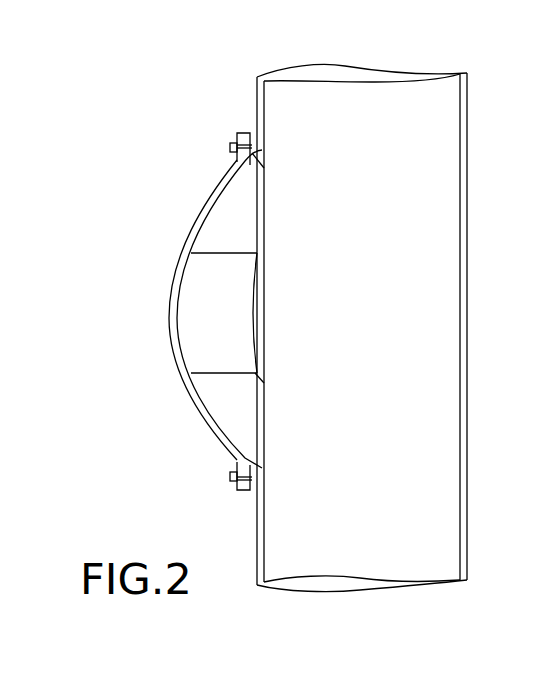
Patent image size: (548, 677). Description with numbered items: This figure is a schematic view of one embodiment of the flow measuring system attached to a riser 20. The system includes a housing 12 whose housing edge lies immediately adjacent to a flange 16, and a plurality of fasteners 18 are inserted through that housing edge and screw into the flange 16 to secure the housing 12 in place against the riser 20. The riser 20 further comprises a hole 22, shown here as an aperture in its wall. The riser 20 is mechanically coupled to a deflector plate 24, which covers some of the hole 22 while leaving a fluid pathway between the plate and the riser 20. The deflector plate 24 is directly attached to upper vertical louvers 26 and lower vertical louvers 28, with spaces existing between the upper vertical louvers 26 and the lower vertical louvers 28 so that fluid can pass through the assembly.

The housing 12 is at (188, 231).
The flange 16 is at (250, 133).
The fasteners 18 is at (232, 148).
The riser 20 is at (255, 93).
The hole 22 is at (238, 212).
The deflector plate 24 is at (266, 298).
The upper vertical louvers 26 is at (267, 211).
The lower vertical louvers 28 is at (266, 416).